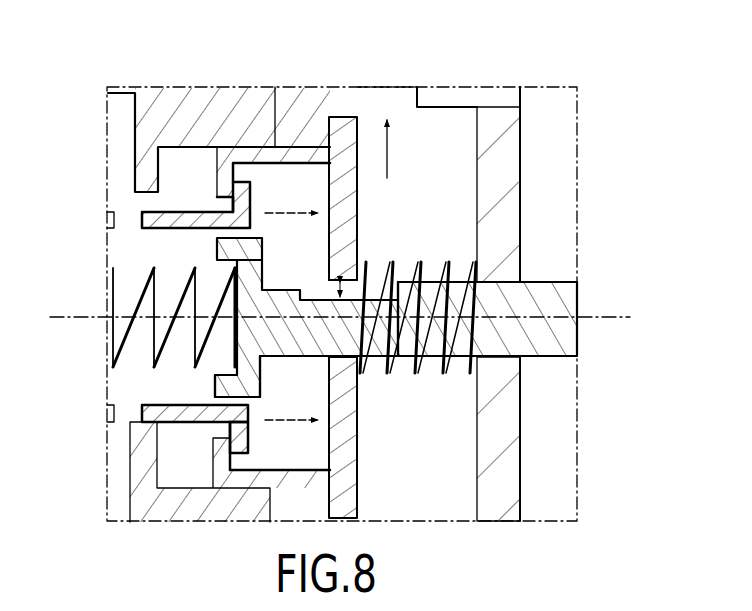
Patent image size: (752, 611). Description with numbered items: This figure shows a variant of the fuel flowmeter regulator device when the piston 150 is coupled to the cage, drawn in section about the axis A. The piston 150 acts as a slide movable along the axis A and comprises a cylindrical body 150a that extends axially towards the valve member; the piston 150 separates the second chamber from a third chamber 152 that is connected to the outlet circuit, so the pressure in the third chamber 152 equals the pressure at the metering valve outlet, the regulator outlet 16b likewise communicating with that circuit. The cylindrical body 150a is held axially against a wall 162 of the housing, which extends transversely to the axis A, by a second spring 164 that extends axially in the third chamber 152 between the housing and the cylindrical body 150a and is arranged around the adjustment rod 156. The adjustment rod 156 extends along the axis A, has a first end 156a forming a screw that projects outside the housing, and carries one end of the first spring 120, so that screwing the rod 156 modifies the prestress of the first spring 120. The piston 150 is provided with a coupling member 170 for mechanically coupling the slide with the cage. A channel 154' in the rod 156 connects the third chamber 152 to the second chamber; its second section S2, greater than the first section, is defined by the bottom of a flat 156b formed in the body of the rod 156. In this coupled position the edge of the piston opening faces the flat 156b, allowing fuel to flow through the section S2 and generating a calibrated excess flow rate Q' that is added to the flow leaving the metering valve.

The first spring 120 is at (150, 358).
The piston 150 is at (347, 457).
The cylindrical body 150a is at (341, 278).
The third chamber 152 is at (432, 142).
The channel 154' is at (311, 270).
The adjustment rod 156 is at (577, 332).
The first end 156a is at (217, 247).
The flat 156b is at (303, 303).
The wall 162 is at (233, 181).
The second spring 164 is at (420, 375).
The coupling member 170 is at (252, 188).
The outlet 16b is at (355, 100).
The second section S2 is at (368, 295).
The calibrated excess flow rate Q' is at (401, 149).
The axis A is at (618, 316).